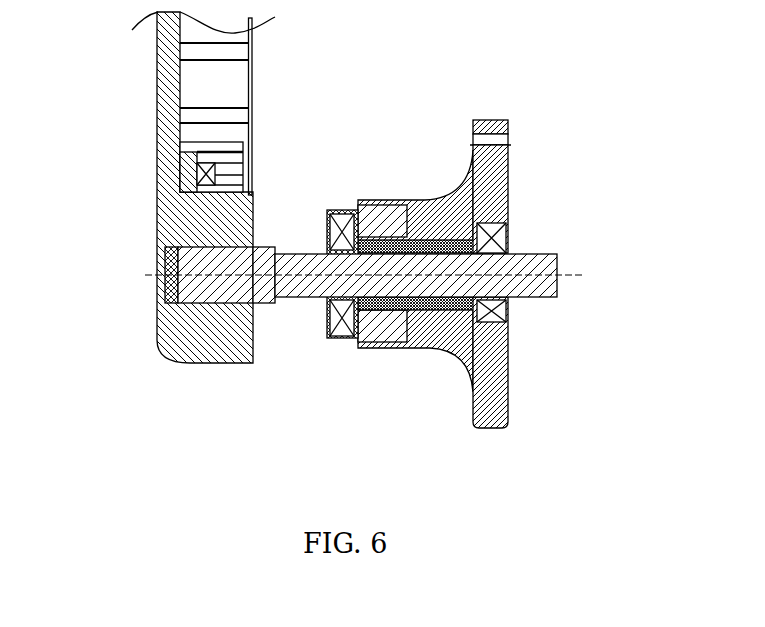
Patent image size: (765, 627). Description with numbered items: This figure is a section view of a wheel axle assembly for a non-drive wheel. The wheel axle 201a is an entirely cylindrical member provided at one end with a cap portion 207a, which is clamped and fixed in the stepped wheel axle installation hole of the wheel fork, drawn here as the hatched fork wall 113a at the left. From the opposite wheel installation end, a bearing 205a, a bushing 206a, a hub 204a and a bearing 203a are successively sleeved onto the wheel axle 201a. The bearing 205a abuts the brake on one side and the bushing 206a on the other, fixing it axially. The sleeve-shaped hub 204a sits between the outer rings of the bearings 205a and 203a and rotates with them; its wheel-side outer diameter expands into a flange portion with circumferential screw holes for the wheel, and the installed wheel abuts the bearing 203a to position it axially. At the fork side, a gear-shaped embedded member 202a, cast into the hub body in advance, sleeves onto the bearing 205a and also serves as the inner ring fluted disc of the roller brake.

The housing / case wall 113a is at (157, 213).
The wheel axle 201a is at (557, 251).
The embedded member 202a is at (358, 203).
The bearing 203a is at (510, 213).
The hub 204a is at (510, 158).
The bearing 205a is at (327, 212).
The bushing 206a is at (505, 375).
The cap portion 207a is at (150, 294).